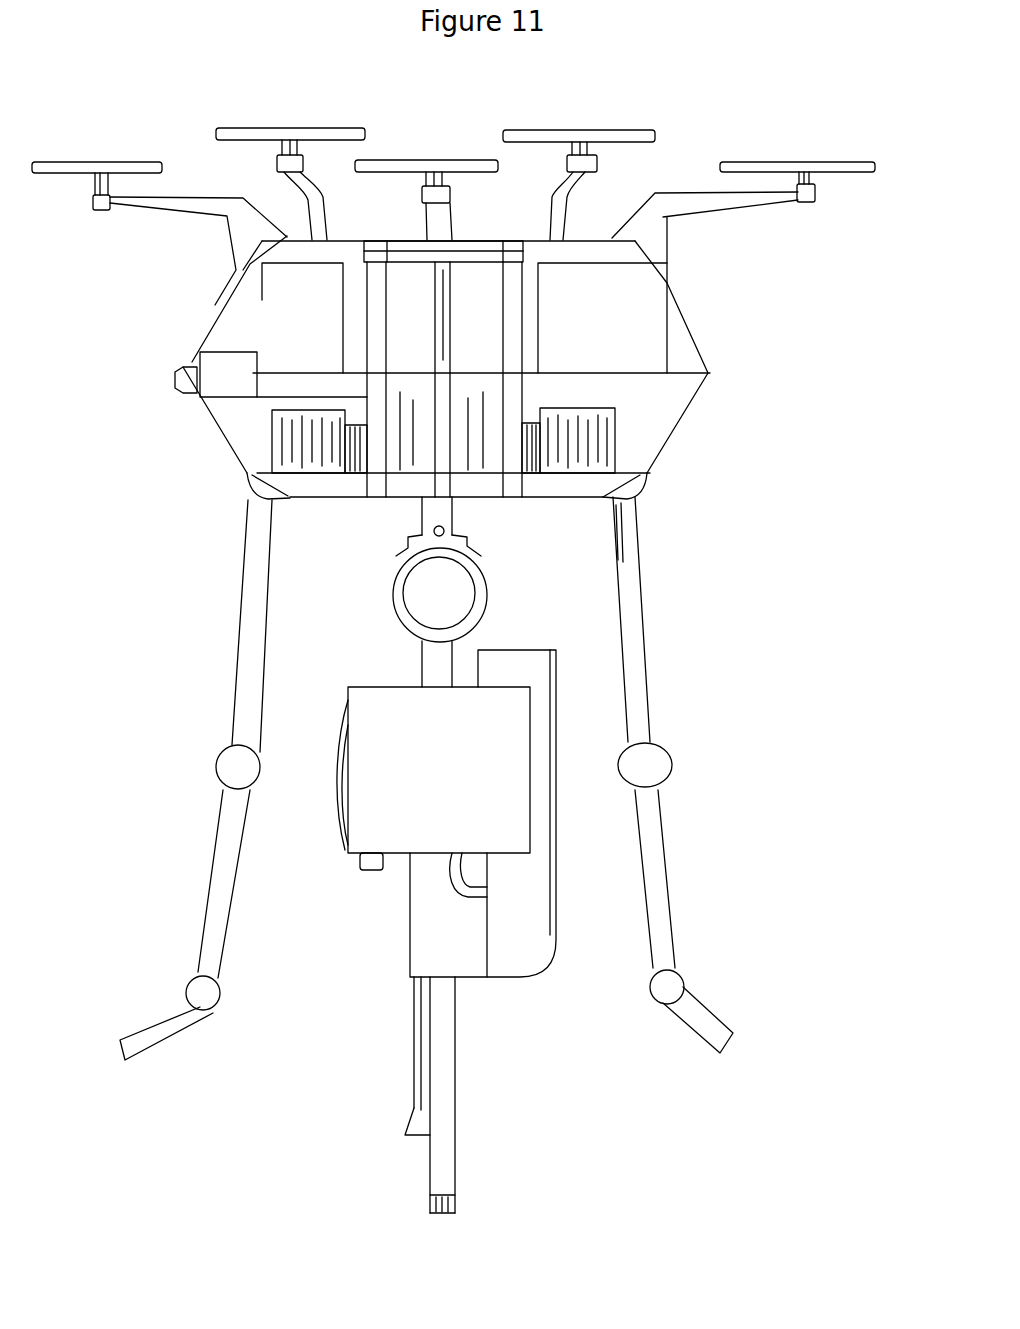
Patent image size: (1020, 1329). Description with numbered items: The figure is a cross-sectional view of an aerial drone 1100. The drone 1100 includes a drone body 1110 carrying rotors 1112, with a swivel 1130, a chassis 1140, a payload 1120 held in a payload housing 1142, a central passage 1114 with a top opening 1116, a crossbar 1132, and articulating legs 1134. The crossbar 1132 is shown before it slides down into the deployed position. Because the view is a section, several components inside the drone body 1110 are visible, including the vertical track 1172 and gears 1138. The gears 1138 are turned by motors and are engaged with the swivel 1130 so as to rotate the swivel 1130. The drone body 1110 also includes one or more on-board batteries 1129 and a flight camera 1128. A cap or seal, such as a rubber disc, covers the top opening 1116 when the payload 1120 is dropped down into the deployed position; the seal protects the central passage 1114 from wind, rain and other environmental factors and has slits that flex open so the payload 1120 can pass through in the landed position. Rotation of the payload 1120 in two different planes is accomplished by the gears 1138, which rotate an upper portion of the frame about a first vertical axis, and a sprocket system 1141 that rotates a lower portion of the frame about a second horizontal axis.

The aerial drone 1100 is at (776, 546).
The drone body 1110 is at (712, 372).
The rotors 1112 is at (757, 160).
The top opening 1116 is at (480, 233).
The crossbar 1132 is at (397, 257).
The vertical track 1172 is at (367, 272).
The central passage 1114 is at (387, 310).
The flight camera 1128 is at (180, 378).
The on-board batteries 1129 is at (587, 323).
The gears 1138 is at (278, 435).
The swivel 1130 is at (490, 485).
The chassis 1140 is at (376, 561).
The sprocket system 1141 is at (393, 588).
The payload housing 1142 is at (490, 730).
The articulating legs 1134 is at (665, 922).
The payload 1120 is at (504, 1129).